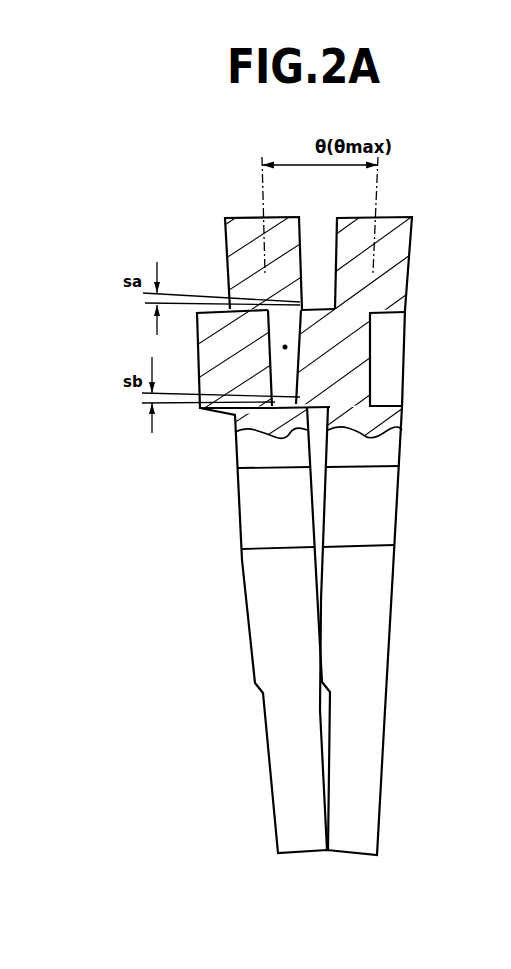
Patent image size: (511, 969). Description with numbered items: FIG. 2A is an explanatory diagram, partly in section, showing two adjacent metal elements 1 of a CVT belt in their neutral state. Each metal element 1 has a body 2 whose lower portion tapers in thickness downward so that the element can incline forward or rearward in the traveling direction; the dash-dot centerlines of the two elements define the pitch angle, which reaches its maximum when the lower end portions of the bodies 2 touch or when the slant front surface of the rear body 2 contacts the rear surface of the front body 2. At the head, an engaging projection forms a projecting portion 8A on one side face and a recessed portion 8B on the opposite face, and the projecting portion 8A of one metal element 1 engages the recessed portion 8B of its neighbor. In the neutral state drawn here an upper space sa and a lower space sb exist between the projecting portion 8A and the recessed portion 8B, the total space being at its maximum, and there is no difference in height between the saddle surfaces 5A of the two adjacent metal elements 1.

The metal element 1 is at (250, 230).
The body 2 is at (285, 750).
The saddle surface 5A is at (267, 545).
The projecting portion 8A is at (318, 311).
The recessed portion 8B is at (285, 347).